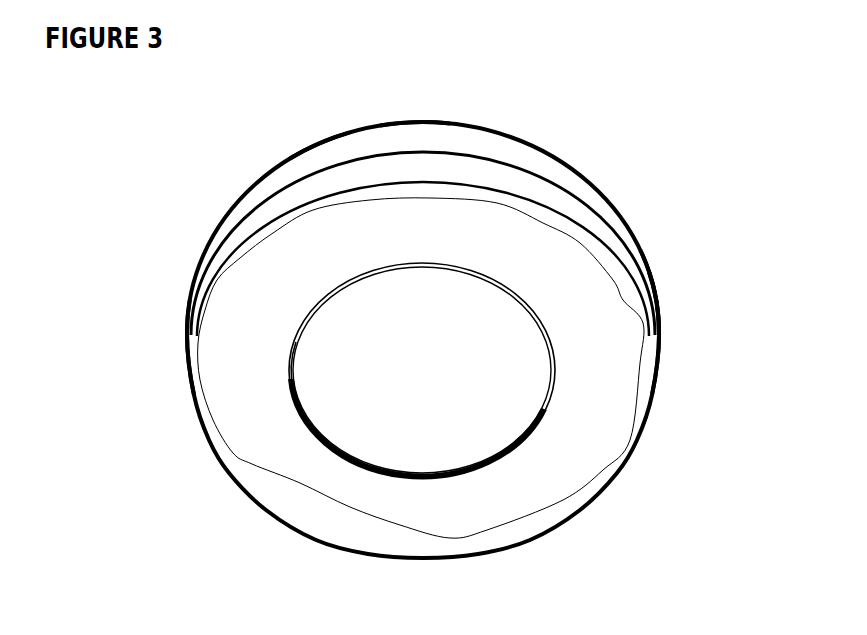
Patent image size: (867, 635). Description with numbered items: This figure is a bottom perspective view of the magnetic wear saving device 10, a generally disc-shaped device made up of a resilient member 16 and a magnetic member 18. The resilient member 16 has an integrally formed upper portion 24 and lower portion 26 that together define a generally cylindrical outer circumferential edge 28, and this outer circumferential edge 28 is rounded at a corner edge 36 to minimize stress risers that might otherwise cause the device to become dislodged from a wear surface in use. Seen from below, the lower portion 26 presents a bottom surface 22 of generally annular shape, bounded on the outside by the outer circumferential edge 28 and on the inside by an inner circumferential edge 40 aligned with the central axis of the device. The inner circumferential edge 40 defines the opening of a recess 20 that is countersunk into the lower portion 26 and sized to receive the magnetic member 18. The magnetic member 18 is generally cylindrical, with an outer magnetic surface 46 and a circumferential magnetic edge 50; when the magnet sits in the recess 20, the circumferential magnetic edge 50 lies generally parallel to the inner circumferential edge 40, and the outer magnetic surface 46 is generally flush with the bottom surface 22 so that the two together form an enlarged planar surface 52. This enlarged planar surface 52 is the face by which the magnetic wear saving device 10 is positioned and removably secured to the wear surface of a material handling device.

The magnetic wear saving device 10 is at (650, 106).
The resilient member 16 is at (181, 293).
The magnetic member 18 is at (547, 405).
The recess 20 is at (350, 287).
The bottom surface 22 is at (617, 367).
The upper portion 24 is at (319, 150).
The lower portion 26 is at (232, 236).
The outer circumferential edge 28 is at (411, 136).
The corner edge 36 is at (513, 133).
The inner circumferential edge 40 is at (293, 363).
The outer magnetic surface 46 is at (485, 323).
The circumferential magnetic edge 50 is at (530, 437).
The enlarged planar surface 52 is at (476, 524).